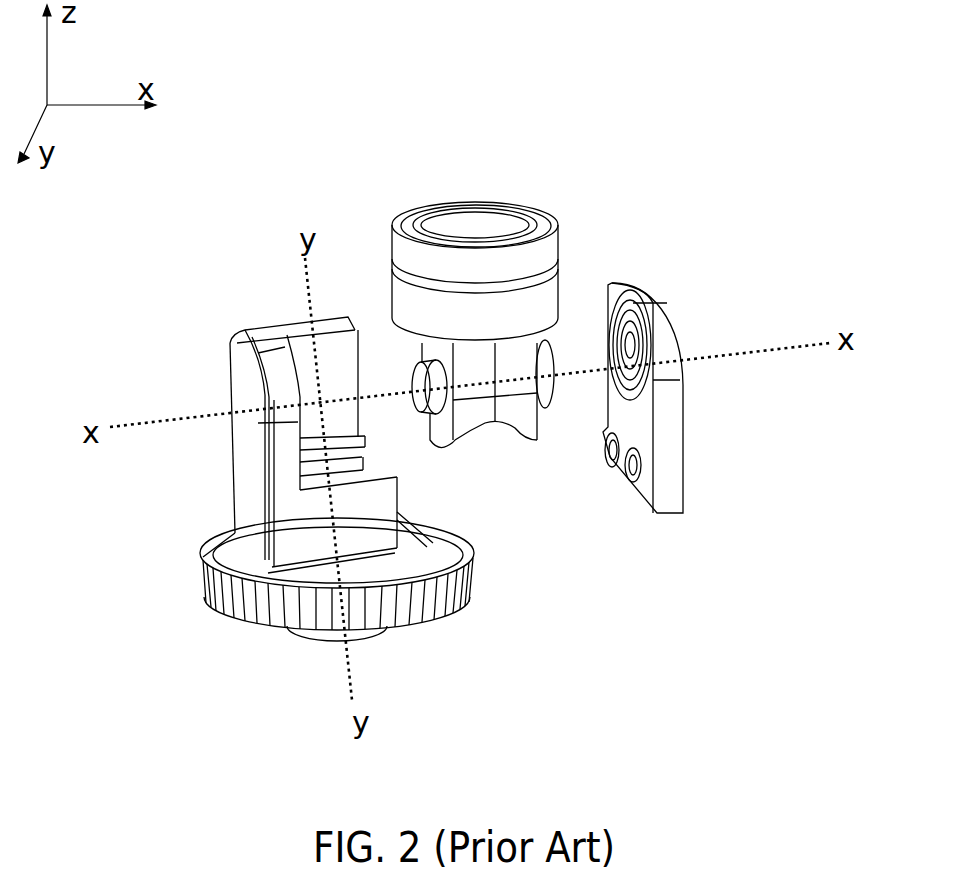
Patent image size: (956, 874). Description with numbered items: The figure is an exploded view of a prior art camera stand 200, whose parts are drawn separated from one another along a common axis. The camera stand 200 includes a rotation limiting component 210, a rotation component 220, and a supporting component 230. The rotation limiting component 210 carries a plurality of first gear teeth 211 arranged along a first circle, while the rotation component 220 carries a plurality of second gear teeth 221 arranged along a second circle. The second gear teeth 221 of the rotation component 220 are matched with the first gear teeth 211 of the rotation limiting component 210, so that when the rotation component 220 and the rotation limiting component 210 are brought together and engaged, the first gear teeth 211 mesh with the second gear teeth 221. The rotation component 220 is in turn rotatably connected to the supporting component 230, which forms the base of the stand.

The camera stand 200 is at (230, 73).
The rotation limiting component 210 is at (618, 283).
The first gear teeth 211 is at (642, 415).
The rotation component 220 is at (468, 222).
The second gear teeth 221 is at (535, 398).
The supporting component 230 is at (288, 348).